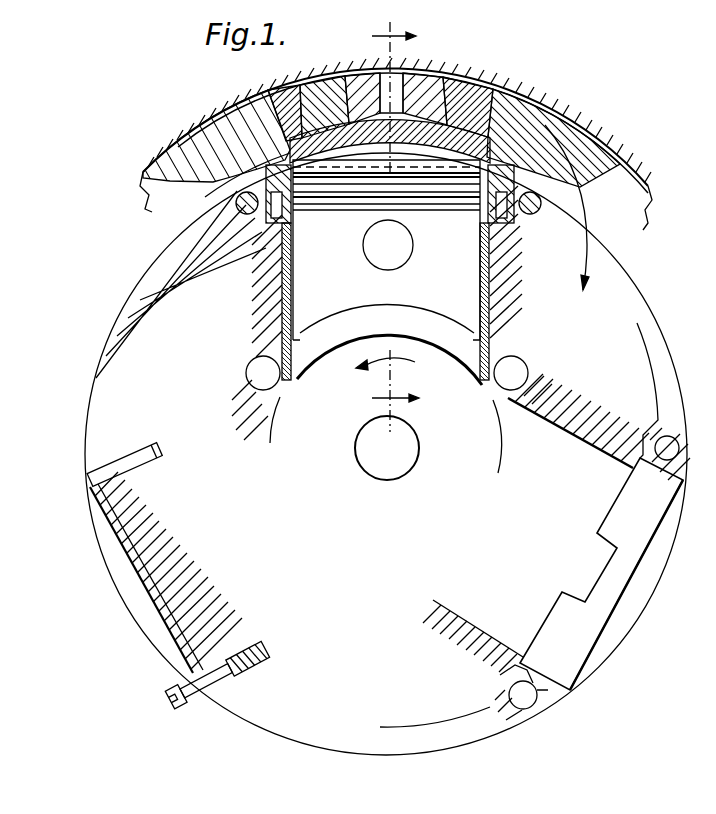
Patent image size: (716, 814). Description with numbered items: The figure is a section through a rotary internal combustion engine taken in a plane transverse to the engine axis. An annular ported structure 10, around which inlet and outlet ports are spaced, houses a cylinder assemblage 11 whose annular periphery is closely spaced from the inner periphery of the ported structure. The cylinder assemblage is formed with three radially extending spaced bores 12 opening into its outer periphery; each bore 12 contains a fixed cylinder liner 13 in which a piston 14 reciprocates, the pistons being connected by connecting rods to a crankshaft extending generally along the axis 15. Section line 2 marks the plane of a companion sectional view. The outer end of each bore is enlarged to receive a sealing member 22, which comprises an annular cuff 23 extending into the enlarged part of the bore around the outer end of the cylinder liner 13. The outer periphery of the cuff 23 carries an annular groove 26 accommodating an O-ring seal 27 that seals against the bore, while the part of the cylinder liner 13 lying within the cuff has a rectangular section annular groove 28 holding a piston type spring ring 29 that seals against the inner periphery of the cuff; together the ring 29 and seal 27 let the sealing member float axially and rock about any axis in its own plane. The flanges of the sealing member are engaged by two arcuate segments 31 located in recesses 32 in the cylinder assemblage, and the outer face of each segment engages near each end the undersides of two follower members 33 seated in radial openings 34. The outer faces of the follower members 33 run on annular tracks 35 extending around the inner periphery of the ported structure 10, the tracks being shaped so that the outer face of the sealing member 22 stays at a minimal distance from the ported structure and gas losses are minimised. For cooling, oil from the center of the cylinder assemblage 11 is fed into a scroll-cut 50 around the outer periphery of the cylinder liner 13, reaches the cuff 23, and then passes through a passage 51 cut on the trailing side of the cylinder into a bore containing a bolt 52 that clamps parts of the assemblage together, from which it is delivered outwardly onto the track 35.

The section line 2- 2 is at (472, 227).
The annular ported structure 10 is at (256, 122).
The cylinder assemblage 11 is at (648, 184).
The bore 12 is at (500, 262).
The cylinder liner 13 is at (500, 292).
The piston 14 is at (500, 312).
The axis 15 is at (395, 468).
The sealing member 22 is at (212, 130).
The annular cuff 23 is at (512, 222).
The annular groove 26 is at (598, 152).
The O-ring seal 27 is at (566, 138).
The rectangular section annular groove 28 is at (490, 195).
The piston type spring ring 29 is at (482, 180).
The arcuate segment 31 is at (411, 130).
The recess 32 is at (284, 98).
The follower member 33 is at (318, 86).
The radial opening 34 is at (356, 98).
The annular track 35 is at (247, 120).
The scroll-cut 50 is at (282, 286).
The passage 51 is at (540, 200).
The bolt 52 is at (200, 138).